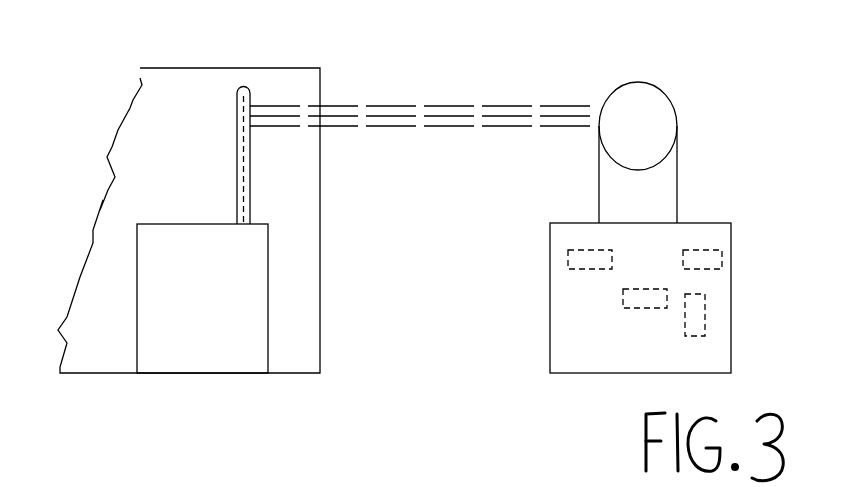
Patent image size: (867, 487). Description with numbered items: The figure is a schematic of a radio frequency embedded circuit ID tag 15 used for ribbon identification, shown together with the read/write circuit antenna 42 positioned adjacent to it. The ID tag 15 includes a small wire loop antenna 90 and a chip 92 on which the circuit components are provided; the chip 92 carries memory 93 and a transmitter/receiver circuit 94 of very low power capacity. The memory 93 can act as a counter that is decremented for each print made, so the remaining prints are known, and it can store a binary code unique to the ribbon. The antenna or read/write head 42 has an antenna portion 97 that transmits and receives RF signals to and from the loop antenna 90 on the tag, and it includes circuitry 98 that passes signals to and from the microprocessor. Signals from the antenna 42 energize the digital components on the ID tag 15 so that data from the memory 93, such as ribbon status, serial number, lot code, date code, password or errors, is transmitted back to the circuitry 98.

The read/write circuit antenna 42 is at (102, 285).
The antenna portion 97 is at (247, 88).
The circuitry 98 is at (255, 307).
The wire loop antenna 90 is at (647, 82).
The chip 92 is at (705, 353).
The memory 93 is at (700, 238).
The transmitter/receiver circuit 94 is at (574, 250).
The RF embedded circuit ID tag 15 is at (752, 307).